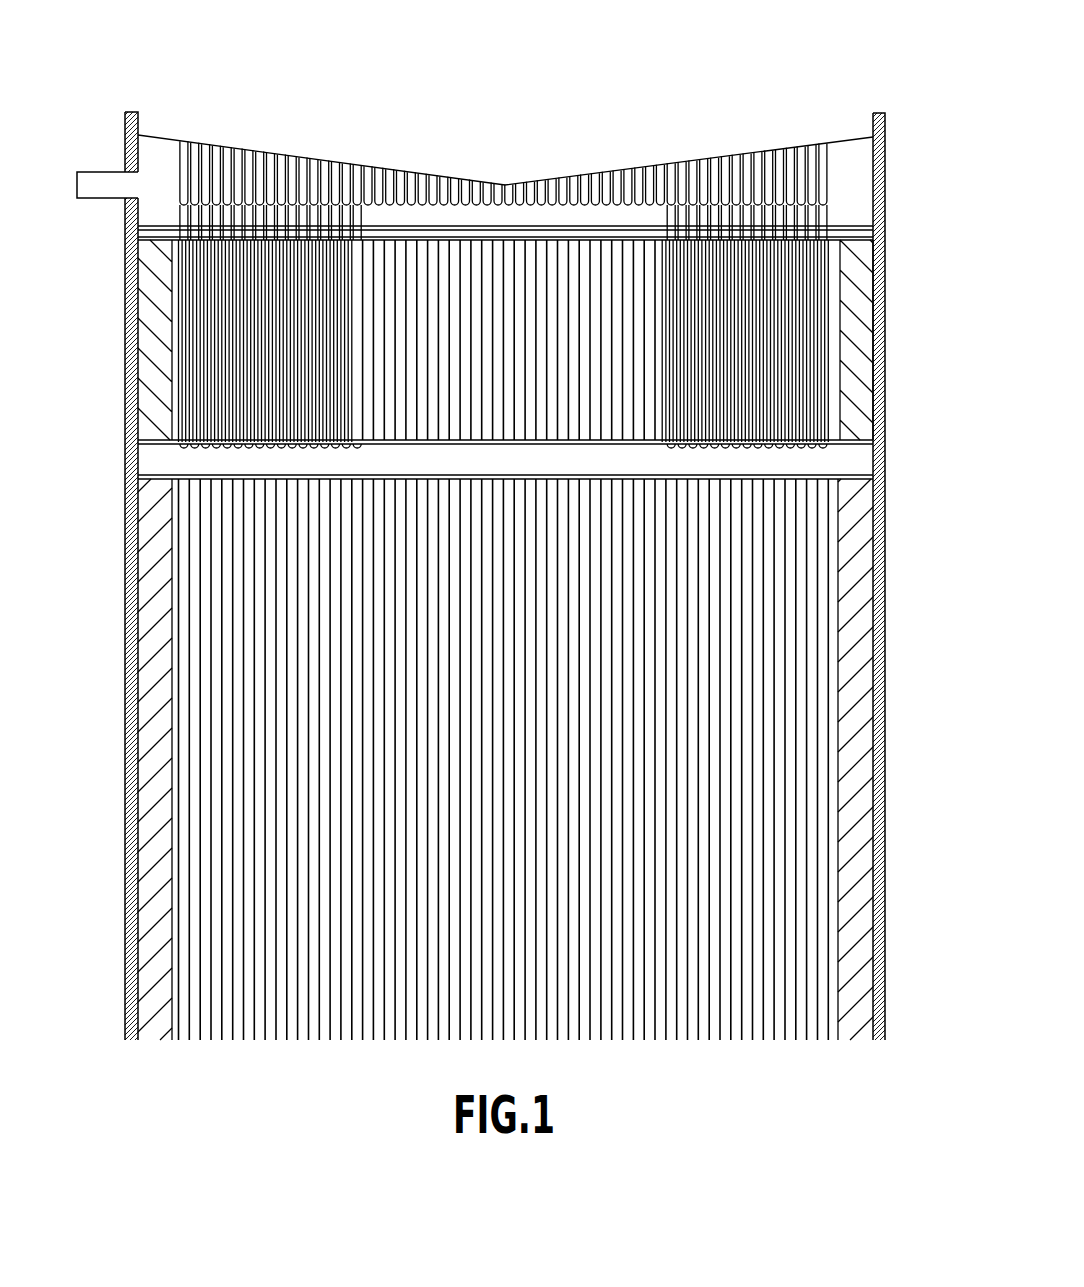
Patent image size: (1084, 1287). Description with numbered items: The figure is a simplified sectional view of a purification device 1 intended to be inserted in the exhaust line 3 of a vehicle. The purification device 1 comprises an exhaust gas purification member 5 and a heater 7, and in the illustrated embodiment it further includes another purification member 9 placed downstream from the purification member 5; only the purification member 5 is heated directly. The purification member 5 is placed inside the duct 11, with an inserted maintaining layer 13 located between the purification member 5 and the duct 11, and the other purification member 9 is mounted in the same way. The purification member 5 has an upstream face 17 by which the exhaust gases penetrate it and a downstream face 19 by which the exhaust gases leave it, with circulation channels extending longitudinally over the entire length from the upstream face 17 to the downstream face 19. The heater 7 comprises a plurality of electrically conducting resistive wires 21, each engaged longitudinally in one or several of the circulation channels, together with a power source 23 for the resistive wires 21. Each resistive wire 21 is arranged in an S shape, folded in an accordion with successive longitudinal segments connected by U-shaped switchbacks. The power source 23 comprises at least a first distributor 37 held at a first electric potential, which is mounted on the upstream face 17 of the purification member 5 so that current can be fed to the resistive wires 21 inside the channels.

The purification device 1 is at (94, 414).
The exhaust line 3 is at (908, 126).
The exhaust gas purification member 5 is at (146, 309).
The heater 7 is at (95, 152).
The other purification member 9 is at (176, 705).
The duct 11 is at (882, 324).
The maintaining layer 13 is at (855, 370).
The upstream face 17 is at (600, 237).
The downstream face 19 is at (592, 446).
The resistive wires 21 is at (325, 446).
The power source 23 is at (391, 145).
The first distributor 37 is at (450, 226).